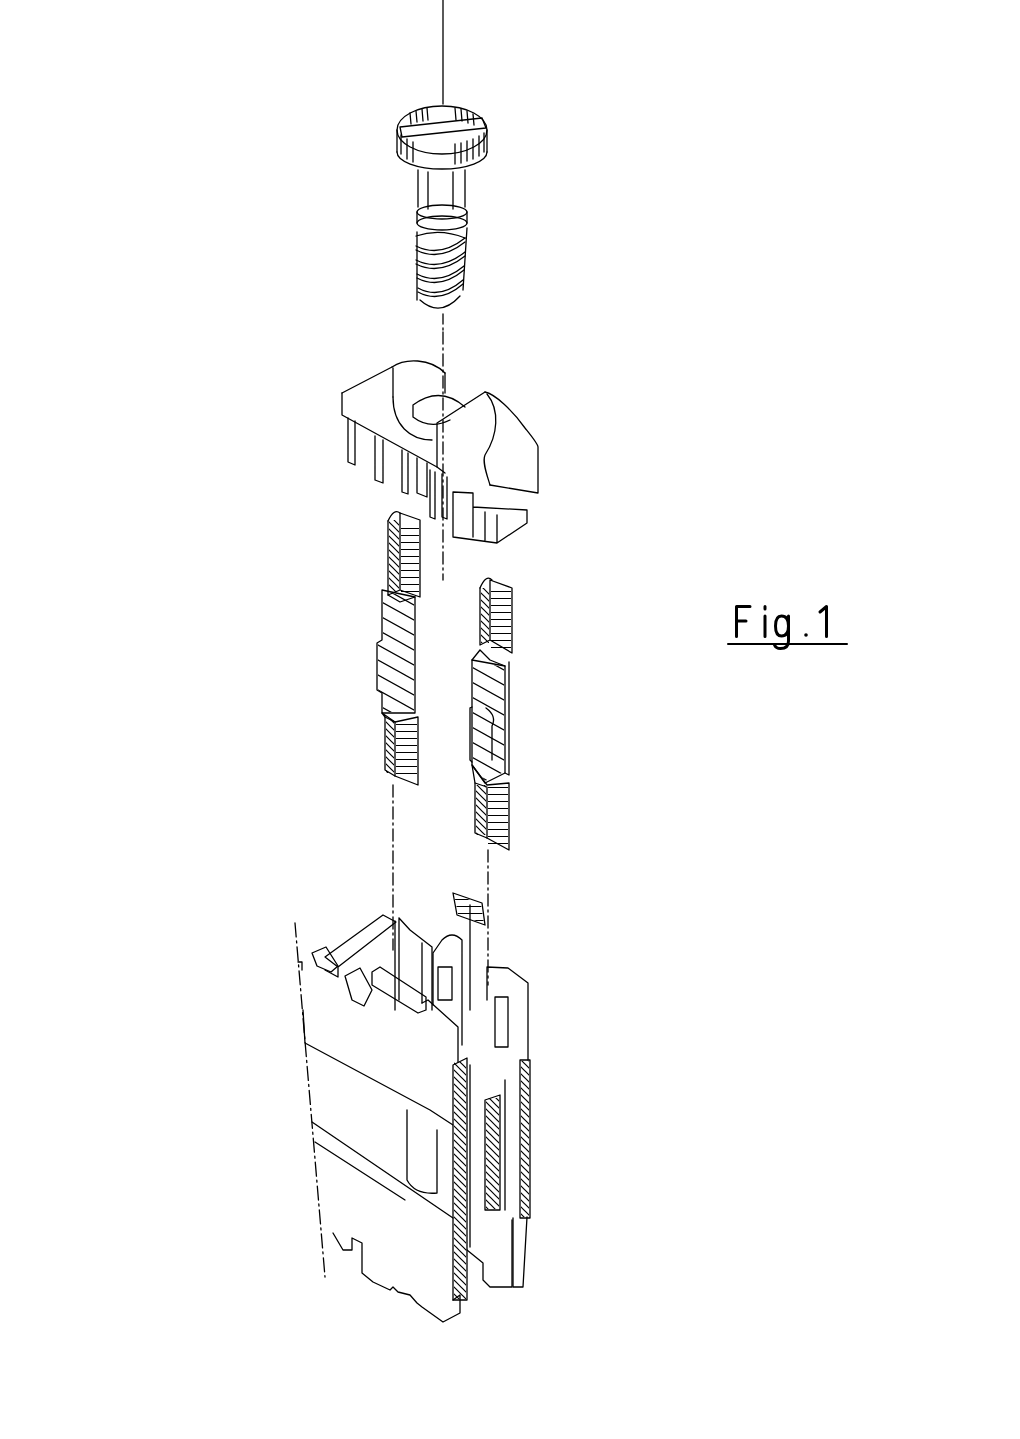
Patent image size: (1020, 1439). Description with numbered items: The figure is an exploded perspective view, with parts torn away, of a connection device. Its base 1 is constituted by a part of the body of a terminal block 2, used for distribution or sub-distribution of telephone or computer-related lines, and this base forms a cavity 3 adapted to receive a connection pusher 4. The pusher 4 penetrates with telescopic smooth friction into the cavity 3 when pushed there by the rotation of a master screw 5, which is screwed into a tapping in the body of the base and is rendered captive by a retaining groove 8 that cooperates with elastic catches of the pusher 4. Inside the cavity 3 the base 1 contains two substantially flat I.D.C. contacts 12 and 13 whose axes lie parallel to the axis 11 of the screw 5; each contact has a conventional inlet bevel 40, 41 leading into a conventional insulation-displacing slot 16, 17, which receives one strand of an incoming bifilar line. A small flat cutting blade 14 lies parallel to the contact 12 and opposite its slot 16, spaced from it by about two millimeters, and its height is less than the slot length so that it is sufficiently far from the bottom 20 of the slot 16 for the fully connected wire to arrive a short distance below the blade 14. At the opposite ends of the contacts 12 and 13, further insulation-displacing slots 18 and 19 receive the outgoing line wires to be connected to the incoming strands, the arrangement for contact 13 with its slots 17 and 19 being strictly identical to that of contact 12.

The base 1 is at (432, 1035).
The terminal block 2 is at (353, 1107).
The cavity 3 is at (668, 1058).
The connection pusher 4 is at (700, 384).
The master screw 5 is at (700, 157).
The groove 8 is at (700, 250).
The axis 11 is at (582, 56).
The I.D.C. contact 12 is at (680, 776).
The I.D.C. contact 13 is at (395, 660).
The cutting blade 14 is at (650, 958).
The insulation-displacing slot 16 is at (508, 642).
The insulation-displacing slot 17 is at (393, 555).
The insulation-displacing slot 18 is at (655, 888).
The insulation-displacing slot 19 is at (388, 752).
The bottom of the insulation-displacing slot 20 is at (492, 662).
The inlet bevel 40 is at (692, 590).
The inlet bevel 41 is at (397, 514).